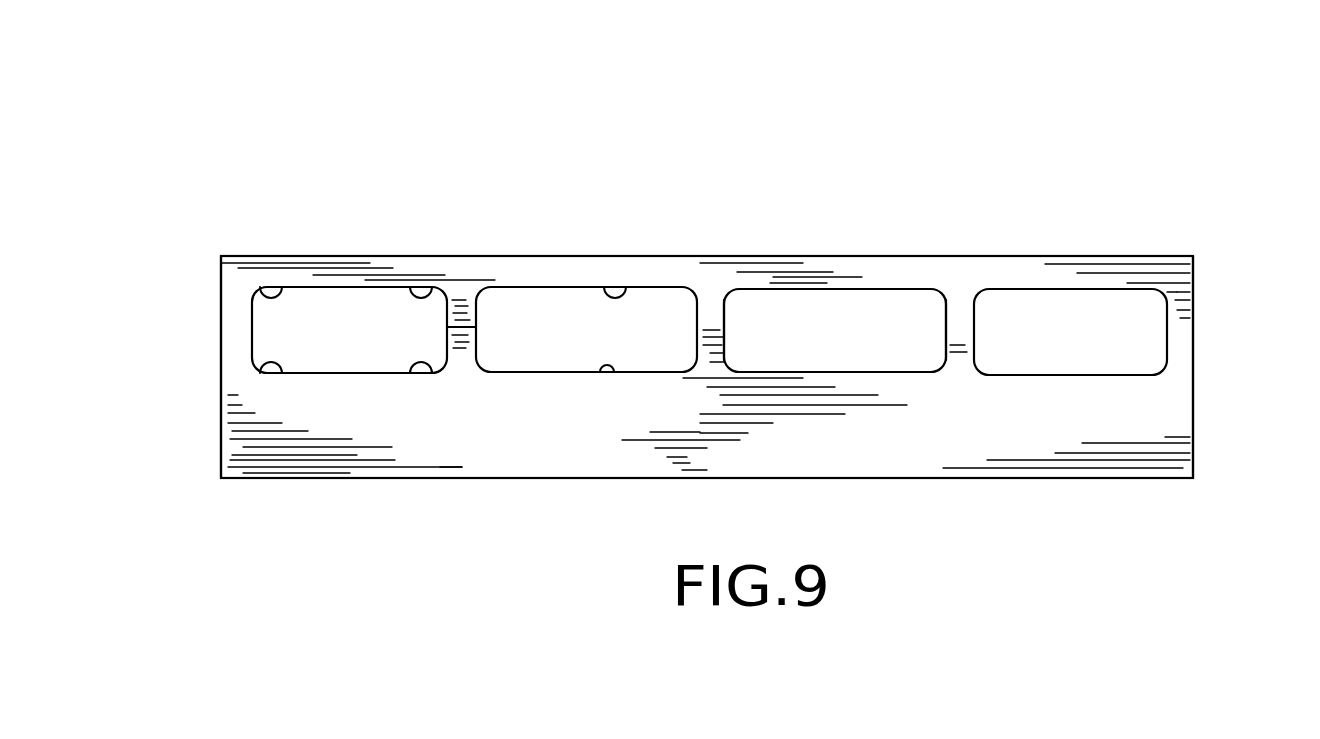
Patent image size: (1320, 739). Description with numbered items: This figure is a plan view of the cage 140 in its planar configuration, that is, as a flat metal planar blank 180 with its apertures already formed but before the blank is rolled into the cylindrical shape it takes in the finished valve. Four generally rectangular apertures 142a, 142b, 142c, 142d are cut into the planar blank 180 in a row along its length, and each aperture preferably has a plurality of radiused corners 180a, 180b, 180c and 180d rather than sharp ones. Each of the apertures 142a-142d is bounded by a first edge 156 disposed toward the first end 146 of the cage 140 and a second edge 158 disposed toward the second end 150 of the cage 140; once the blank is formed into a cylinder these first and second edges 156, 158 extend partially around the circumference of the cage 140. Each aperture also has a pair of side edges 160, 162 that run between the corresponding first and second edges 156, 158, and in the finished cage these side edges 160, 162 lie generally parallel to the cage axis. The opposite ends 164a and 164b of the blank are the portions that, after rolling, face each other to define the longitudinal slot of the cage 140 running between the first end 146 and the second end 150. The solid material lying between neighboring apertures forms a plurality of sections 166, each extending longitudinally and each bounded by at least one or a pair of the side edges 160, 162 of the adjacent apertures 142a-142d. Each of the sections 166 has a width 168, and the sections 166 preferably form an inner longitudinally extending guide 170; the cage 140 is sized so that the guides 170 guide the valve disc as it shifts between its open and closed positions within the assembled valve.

The cage 140 is at (1047, 480).
The aperture 142a is at (1063, 323).
The aperture 142b is at (822, 325).
The aperture 142c is at (558, 327).
The aperture 142d is at (310, 317).
The first end 146 is at (367, 257).
The second end 150 is at (473, 478).
The first edge 156 is at (633, 290).
The second edge 158 is at (608, 375).
The side edge 160 is at (940, 328).
The side edge 162 is at (727, 323).
The end of the cage 164a is at (1193, 408).
The end of the cage 164b is at (221, 353).
The section 166 is at (235, 293).
The width 168 is at (477, 312).
The guide 170 is at (240, 315).
The planar blank 180 is at (1140, 480).
The radiused corner 180a is at (403, 303).
The radiused corner 180b is at (273, 290).
The radiused corner 180c is at (283, 373).
The radiused corner 180d is at (423, 365).